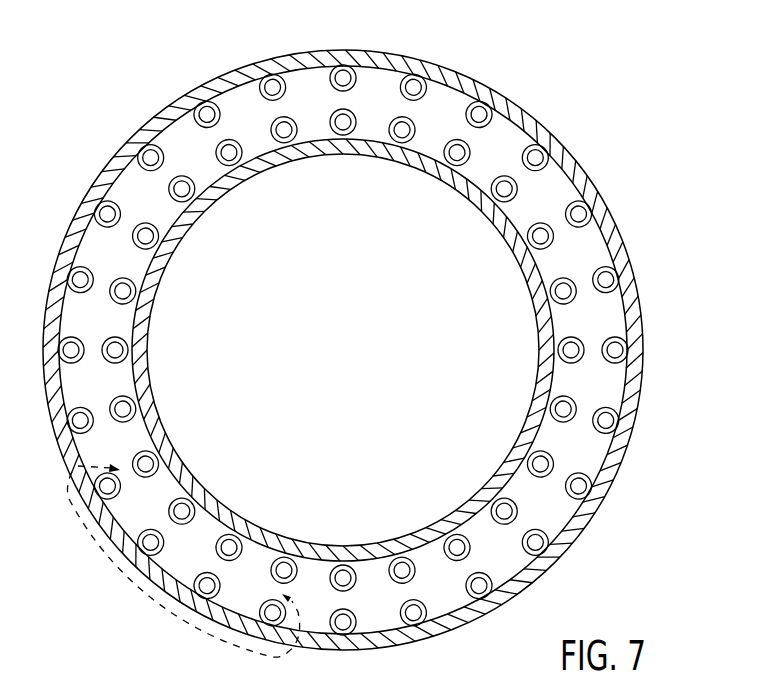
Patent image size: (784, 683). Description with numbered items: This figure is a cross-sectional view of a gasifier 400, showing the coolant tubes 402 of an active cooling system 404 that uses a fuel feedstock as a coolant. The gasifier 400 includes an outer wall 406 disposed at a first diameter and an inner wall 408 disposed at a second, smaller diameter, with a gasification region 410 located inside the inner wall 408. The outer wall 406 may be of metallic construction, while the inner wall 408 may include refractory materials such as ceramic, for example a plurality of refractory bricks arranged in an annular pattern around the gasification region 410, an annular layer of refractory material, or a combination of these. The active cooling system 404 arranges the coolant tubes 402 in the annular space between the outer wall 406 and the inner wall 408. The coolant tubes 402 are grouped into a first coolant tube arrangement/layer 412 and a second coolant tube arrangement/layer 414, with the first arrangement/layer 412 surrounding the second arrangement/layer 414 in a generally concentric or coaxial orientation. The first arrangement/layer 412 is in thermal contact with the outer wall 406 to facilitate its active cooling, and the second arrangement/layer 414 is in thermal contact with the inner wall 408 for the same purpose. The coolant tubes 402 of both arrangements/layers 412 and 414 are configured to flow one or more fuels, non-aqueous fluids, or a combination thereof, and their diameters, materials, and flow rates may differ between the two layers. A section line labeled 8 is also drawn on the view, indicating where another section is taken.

The gasifier 400 is at (580, 82).
The coolant tubes 402 is at (168, 192).
The active cooling system 404 is at (172, 152).
The outer wall 406 is at (505, 102).
The inner wall 408 is at (408, 157).
The gasification region 410 is at (360, 363).
The first coolant tube arrangement/layer 412 is at (615, 289).
The second coolant tube arrangement/layer 414 is at (541, 222).
The section line 8- 8 is at (188, 547).